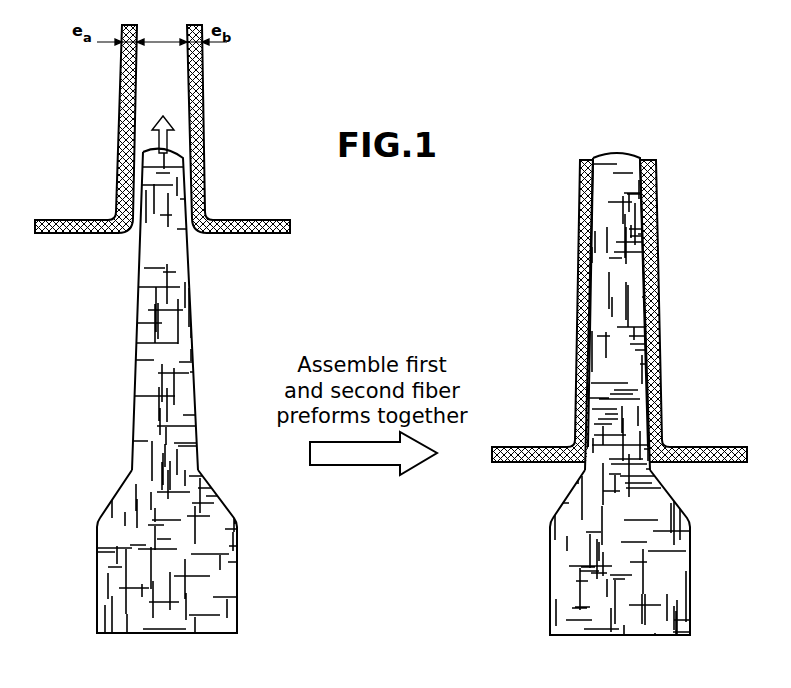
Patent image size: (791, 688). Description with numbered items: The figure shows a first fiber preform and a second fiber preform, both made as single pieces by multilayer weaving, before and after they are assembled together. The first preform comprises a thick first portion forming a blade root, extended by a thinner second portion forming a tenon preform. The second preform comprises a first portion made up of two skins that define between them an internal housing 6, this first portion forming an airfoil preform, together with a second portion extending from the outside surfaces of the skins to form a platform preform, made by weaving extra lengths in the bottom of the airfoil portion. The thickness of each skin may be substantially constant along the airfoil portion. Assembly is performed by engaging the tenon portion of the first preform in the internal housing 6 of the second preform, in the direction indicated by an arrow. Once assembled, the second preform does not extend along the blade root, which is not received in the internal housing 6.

The internal housing 6 is at (167, 85).